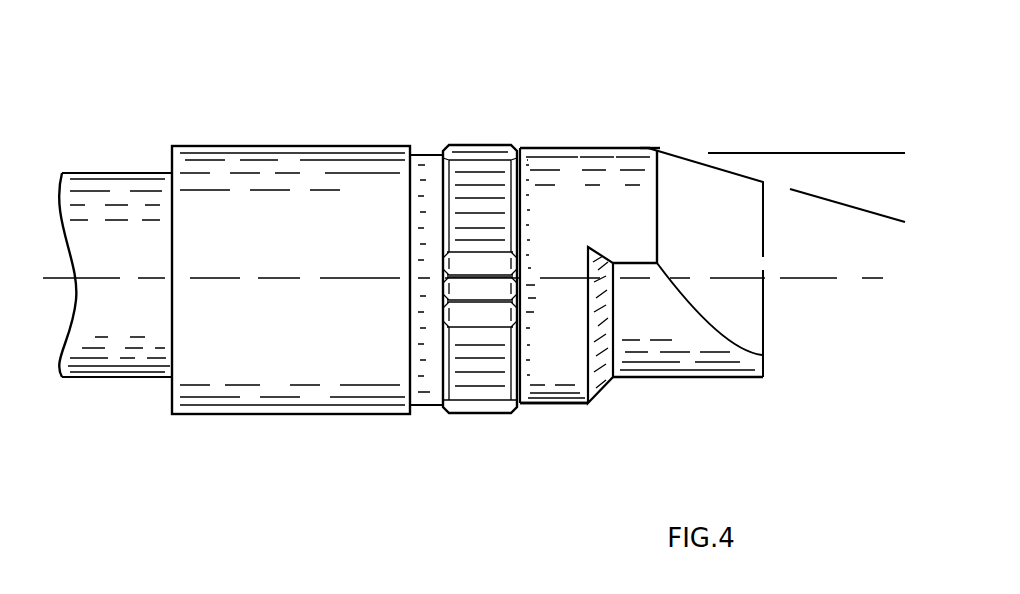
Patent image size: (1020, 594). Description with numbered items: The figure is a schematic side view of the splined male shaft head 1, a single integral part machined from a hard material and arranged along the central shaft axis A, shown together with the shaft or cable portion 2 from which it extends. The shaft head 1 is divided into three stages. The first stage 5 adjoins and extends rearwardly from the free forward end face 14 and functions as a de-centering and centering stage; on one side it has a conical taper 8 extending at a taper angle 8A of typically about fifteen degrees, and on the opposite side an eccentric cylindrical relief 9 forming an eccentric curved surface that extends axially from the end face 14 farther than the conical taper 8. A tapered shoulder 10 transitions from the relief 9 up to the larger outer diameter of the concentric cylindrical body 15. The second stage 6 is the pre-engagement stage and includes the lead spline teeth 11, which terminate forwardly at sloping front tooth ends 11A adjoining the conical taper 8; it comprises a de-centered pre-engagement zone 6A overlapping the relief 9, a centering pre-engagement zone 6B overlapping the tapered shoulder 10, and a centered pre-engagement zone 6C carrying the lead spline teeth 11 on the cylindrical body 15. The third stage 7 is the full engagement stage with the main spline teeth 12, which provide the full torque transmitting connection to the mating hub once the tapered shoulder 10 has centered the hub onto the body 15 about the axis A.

The splined male shaft head 1 is at (573, 472).
The cable 2 is at (235, 110).
The first stage 5 is at (696, 364).
The second stage 6 is at (588, 215).
The de-centered pre-engagement zone 6A is at (635, 177).
The centering pre-engagement zone 6B is at (614, 142).
The centered pre-engagement zone 6C is at (578, 142).
The third stage 7 is at (470, 290).
The conical taper 8 is at (750, 226).
The taper angle 8A is at (873, 155).
The eccentric cylindrical relief 9 is at (693, 357).
The tapered shoulder 10 is at (600, 383).
The lead spline teeth 11 is at (522, 148).
The sloping front tooth ends 11A is at (640, 148).
The main spline teeth 12 is at (448, 155).
The end face 14 is at (730, 314).
The concentric cylindrical body 15 is at (545, 404).
The shaft axis A is at (802, 279).